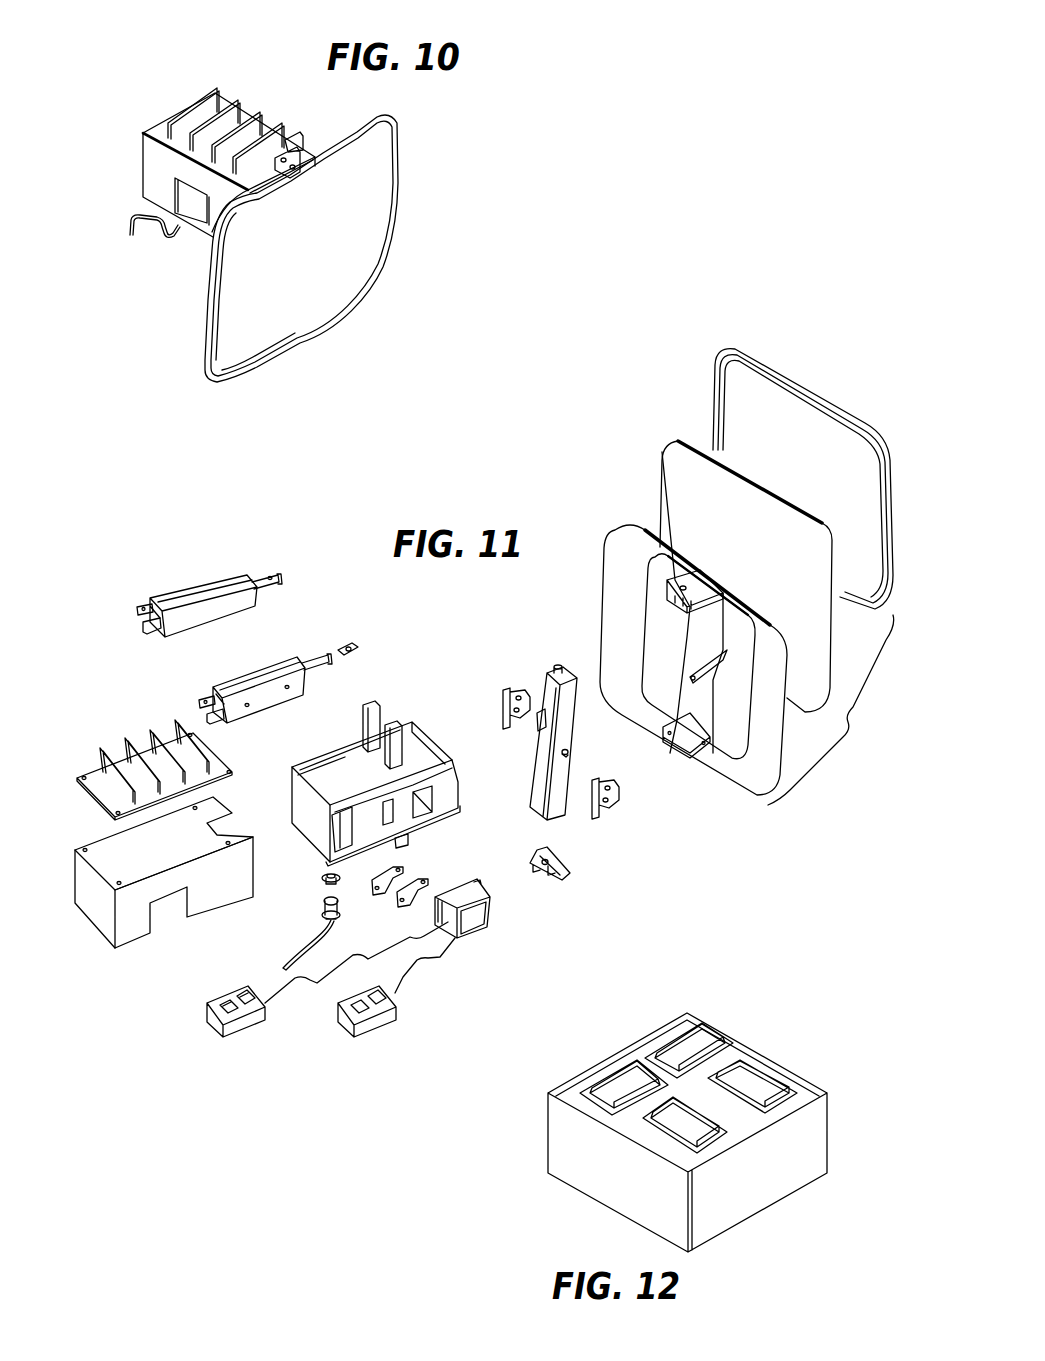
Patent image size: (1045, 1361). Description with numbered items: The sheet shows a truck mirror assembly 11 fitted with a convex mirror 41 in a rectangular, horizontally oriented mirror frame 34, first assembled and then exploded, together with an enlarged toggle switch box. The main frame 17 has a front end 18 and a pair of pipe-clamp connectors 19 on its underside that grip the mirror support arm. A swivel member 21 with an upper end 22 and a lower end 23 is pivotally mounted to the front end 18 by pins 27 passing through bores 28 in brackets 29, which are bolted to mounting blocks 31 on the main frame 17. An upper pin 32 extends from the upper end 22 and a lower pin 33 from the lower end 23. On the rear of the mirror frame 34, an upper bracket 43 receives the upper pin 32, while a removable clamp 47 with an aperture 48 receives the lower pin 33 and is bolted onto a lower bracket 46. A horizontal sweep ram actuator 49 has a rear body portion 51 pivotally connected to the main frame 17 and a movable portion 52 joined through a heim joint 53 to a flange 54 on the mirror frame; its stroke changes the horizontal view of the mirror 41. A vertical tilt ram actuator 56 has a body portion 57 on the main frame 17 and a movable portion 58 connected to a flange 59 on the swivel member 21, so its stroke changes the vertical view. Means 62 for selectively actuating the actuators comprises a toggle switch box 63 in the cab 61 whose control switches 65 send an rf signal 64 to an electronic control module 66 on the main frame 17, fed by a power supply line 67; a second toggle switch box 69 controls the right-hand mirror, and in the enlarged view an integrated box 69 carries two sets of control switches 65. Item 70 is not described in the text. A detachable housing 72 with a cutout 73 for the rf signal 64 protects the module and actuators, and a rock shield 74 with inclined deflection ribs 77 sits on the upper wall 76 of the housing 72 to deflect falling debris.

In FIG. 10, the mirror assembly 11 is at (177, 350).
In FIG. 11, the mirror assembly 11 is at (540, 930).
In FIG. 10, the main frame 17 is at (187, 129).
In FIG. 11, the main frame 17 is at (377, 796).
In FIG. 11, the front end 18 is at (462, 810).
In FIG. 11, the connectors 19 is at (383, 897).
In FIG. 11, the swivel member 21 is at (549, 717).
In FIG. 11, the upper end 22 is at (573, 707).
In FIG. 11, the lower end 23 is at (563, 803).
In FIG. 11, the pins 27 is at (567, 753).
In FIG. 11, the bores 28 is at (510, 690).
In FIG. 11, the brackets 29 is at (503, 706).
In FIG. 11, the mounting blocks 31 is at (460, 780).
In FIG. 11, the upper pin 32 is at (560, 665).
In FIG. 11, the lower pin 33 is at (547, 827).
In FIG. 10, the mirror frame 34 is at (437, 237).
In FIG. 11, the mirror frame 34 is at (698, 402).
In FIG. 11, the mirror 41 is at (661, 462).
In FIG. 11, the upper bracket 43 is at (660, 545).
In FIG. 11, the lower bracket 46 is at (673, 741).
In FIG. 11, the removable clamp 47 is at (559, 887).
In FIG. 11, the aperture 48 is at (542, 884).
In FIG. 11, the horizontal sweep ram actuator 49 is at (264, 654).
In FIG. 11, the rear body portion 51 is at (213, 688).
In FIG. 11, the movable portion 52 is at (303, 663).
In FIG. 11, the heim joint 53 is at (347, 643).
In FIG. 11, the flange 54 is at (712, 685).
In FIG. 11, the vertical tilt ram actuator 56 is at (196, 574).
In FIG. 11, the body portion 57 is at (153, 600).
In FIG. 11, the movable portion 58 is at (252, 585).
In FIG. 11, the flange 59 is at (540, 723).
In FIG. 12, the cab 61 is at (725, 1062).
In FIG. 11, the means for selectively actuating 62 is at (327, 1005).
In FIG. 11, the toggle switch box 63 is at (238, 1034).
In FIG. 11, the rf signal 64 is at (287, 990).
In FIG. 11, the control switches 65 is at (240, 1018).
In FIG. 12, the control switches 65 is at (620, 1085).
In FIG. 10, the electronic control module 66 is at (175, 215).
In FIG. 11, the electronic control module 66 is at (481, 937).
In FIG. 10, the power supply line 67 is at (146, 228).
In FIG. 11, the power supply line 67 is at (297, 945).
In FIG. 12, the second toggle switch box 69 is at (714, 1119).
In FIG. 11, the second switch housing 70 is at (375, 1027).
In FIG. 10, the detachable housing 72 is at (160, 158).
In FIG. 11, the detachable housing 72 is at (158, 890).
In FIG. 11, the cutout 73 is at (187, 920).
In FIG. 10, the rock shield 74 is at (218, 100).
In FIG. 11, the rock shield 74 is at (145, 756).
In FIG. 11, the upper wall 76 is at (104, 851).
In FIG. 10, the inclined deflection ribs 77 is at (207, 88).
In FIG. 11, the inclined deflection ribs 77 is at (103, 758).